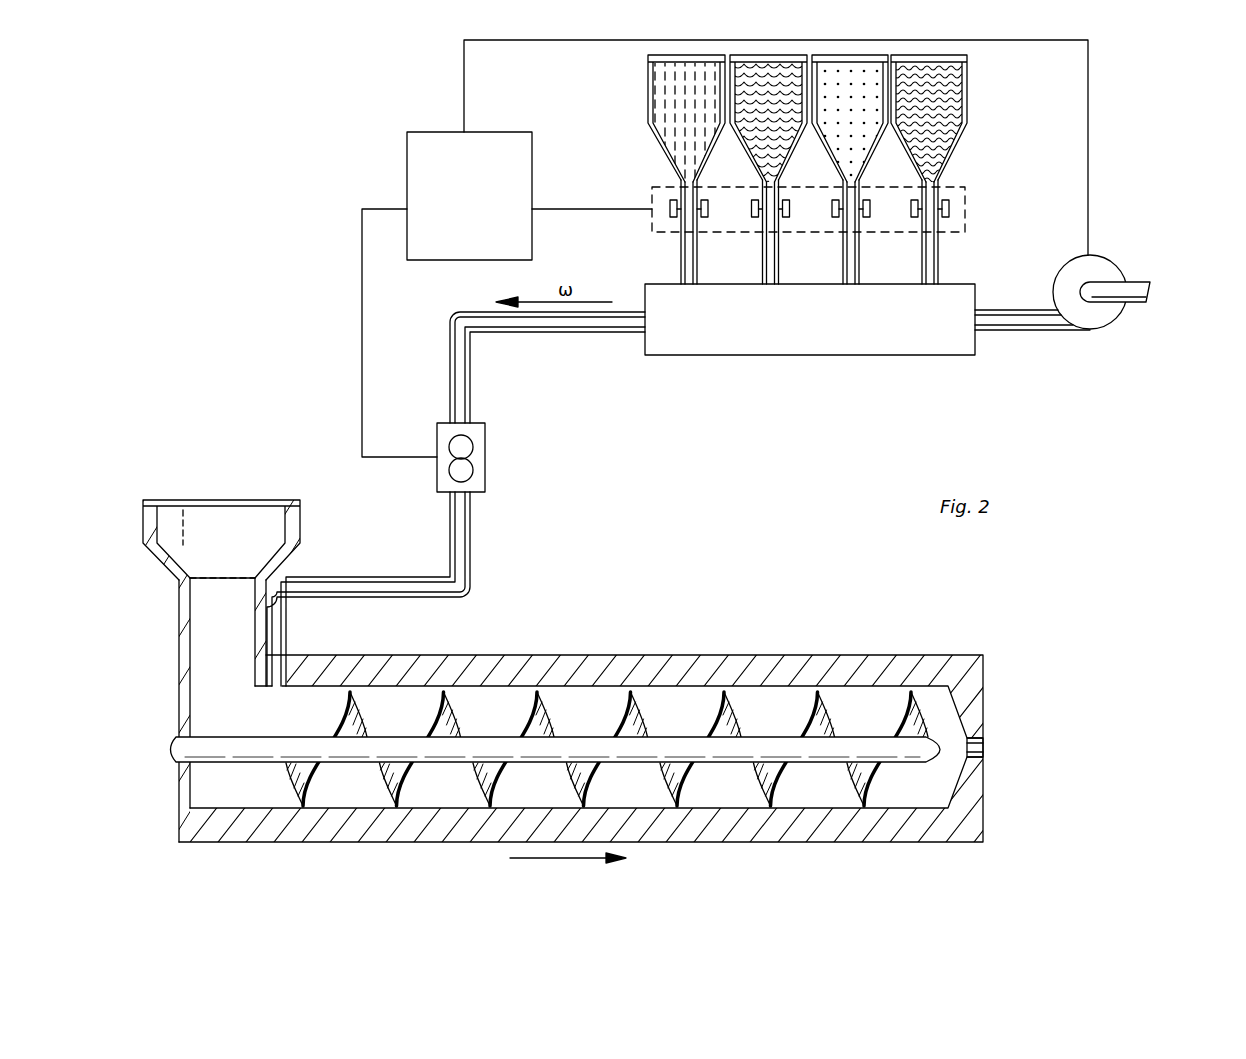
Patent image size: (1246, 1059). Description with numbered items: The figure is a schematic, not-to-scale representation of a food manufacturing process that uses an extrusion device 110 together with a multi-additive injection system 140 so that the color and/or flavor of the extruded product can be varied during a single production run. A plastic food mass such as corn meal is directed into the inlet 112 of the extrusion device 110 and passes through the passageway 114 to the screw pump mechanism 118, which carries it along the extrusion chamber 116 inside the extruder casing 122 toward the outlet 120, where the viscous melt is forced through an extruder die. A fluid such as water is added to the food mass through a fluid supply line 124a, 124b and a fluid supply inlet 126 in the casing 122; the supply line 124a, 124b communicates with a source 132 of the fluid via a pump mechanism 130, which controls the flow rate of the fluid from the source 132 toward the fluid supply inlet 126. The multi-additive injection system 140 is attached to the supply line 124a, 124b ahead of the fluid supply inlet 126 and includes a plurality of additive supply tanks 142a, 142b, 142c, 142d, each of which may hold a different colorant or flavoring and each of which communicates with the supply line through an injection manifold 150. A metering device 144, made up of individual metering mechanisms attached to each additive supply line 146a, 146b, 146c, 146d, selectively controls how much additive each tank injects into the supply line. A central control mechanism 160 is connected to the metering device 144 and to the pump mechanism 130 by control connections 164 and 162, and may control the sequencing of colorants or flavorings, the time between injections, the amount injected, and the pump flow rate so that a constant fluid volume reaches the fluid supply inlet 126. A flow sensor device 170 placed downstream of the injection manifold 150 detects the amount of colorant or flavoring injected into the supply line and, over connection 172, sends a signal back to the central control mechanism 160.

The extrusion device 110 is at (570, 690).
The inlet 112 is at (230, 500).
The passageway 114 is at (204, 636).
The extrusion chamber 116 is at (302, 794).
The screw pump mechanism 118 is at (450, 760).
The outlet 120 is at (985, 746).
The extruder casing 122 is at (752, 660).
The fluid supply line 124a is at (1015, 332).
The fluid supply line 124b is at (512, 335).
The fluid supply inlet 126 is at (288, 650).
The pump mechanism 130 is at (1115, 262).
The source 132 is at (1152, 290).
The multi-additive injection system 140 is at (755, 118).
The additive supply tank 142a is at (665, 104).
The additive supply tank 142b is at (746, 104).
The additive supply tank 142c is at (827, 104).
The additive supply tank 142d is at (906, 104).
The metering device 144 is at (968, 187).
The additive supply line 146a is at (681, 264).
The additive supply line 146b is at (762, 272).
The additive supply line 146c is at (885, 262).
The additive supply line 146d is at (938, 268).
The injection manifold 150 is at (794, 327).
The central control mechanism 160 is at (453, 200).
The control line 162 is at (464, 64).
The control line 164 is at (558, 209).
The flow sensor device 170 is at (485, 455).
The control line 172 is at (362, 296).